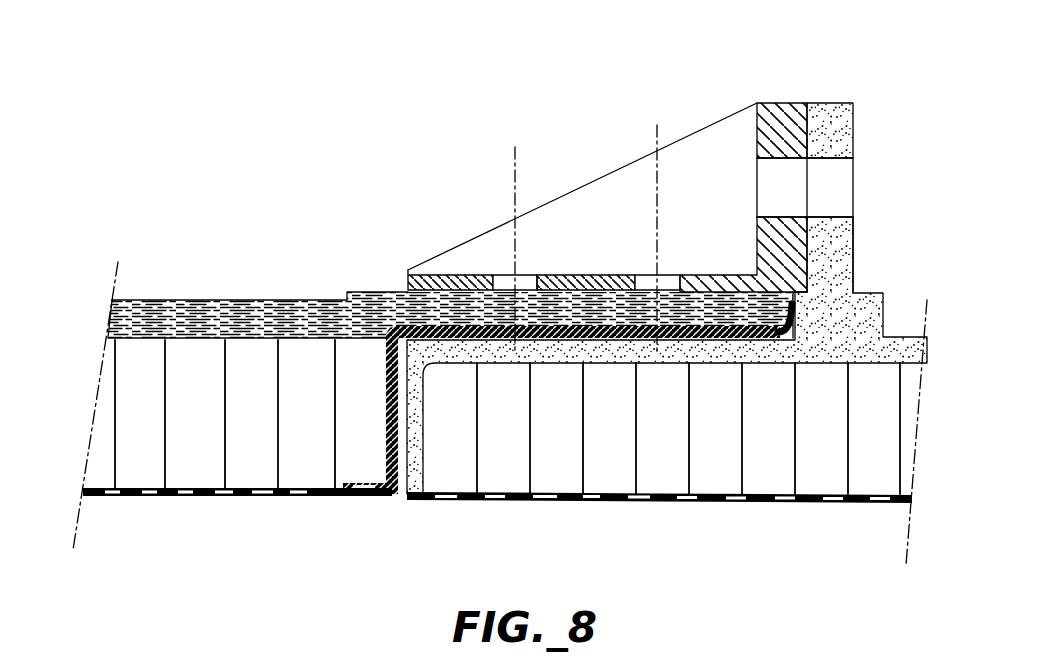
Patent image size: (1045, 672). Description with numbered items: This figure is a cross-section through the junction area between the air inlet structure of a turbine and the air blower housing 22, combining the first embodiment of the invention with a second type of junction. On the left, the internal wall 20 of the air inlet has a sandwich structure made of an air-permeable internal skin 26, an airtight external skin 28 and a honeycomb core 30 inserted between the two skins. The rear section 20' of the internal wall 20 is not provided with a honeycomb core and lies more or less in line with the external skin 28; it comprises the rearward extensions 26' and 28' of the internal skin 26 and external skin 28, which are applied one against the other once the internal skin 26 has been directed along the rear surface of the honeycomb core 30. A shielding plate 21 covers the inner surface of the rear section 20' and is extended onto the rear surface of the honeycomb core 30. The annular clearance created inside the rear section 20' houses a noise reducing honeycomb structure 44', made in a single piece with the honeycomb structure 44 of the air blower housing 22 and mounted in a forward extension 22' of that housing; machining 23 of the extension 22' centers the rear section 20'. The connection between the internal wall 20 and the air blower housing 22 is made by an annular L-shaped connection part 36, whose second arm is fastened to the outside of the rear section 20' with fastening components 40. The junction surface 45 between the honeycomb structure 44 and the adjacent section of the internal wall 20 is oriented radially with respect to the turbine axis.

The internal wall 20 is at (240, 385).
The external skin 28 is at (254, 279).
The shielding plate 21 is at (435, 325).
The junction surface 45 is at (402, 467).
The machining 23 is at (790, 337).
The honeycomb core 30 is at (247, 453).
The internal skin 26 is at (236, 526).
The extension of the external skin 28' is at (591, 264).
The extension of the internal skin 26' is at (544, 254).
The rear section 20' is at (607, 197).
The connection part 36 is at (727, 103).
The fastening components 40 is at (657, 132).
The air blower housing 22 is at (910, 393).
The forward extension of the air blower housing 22' is at (667, 355).
The honeycomb structure 44 is at (786, 529).
The noise reducing honeycomb structure 44' is at (653, 461).